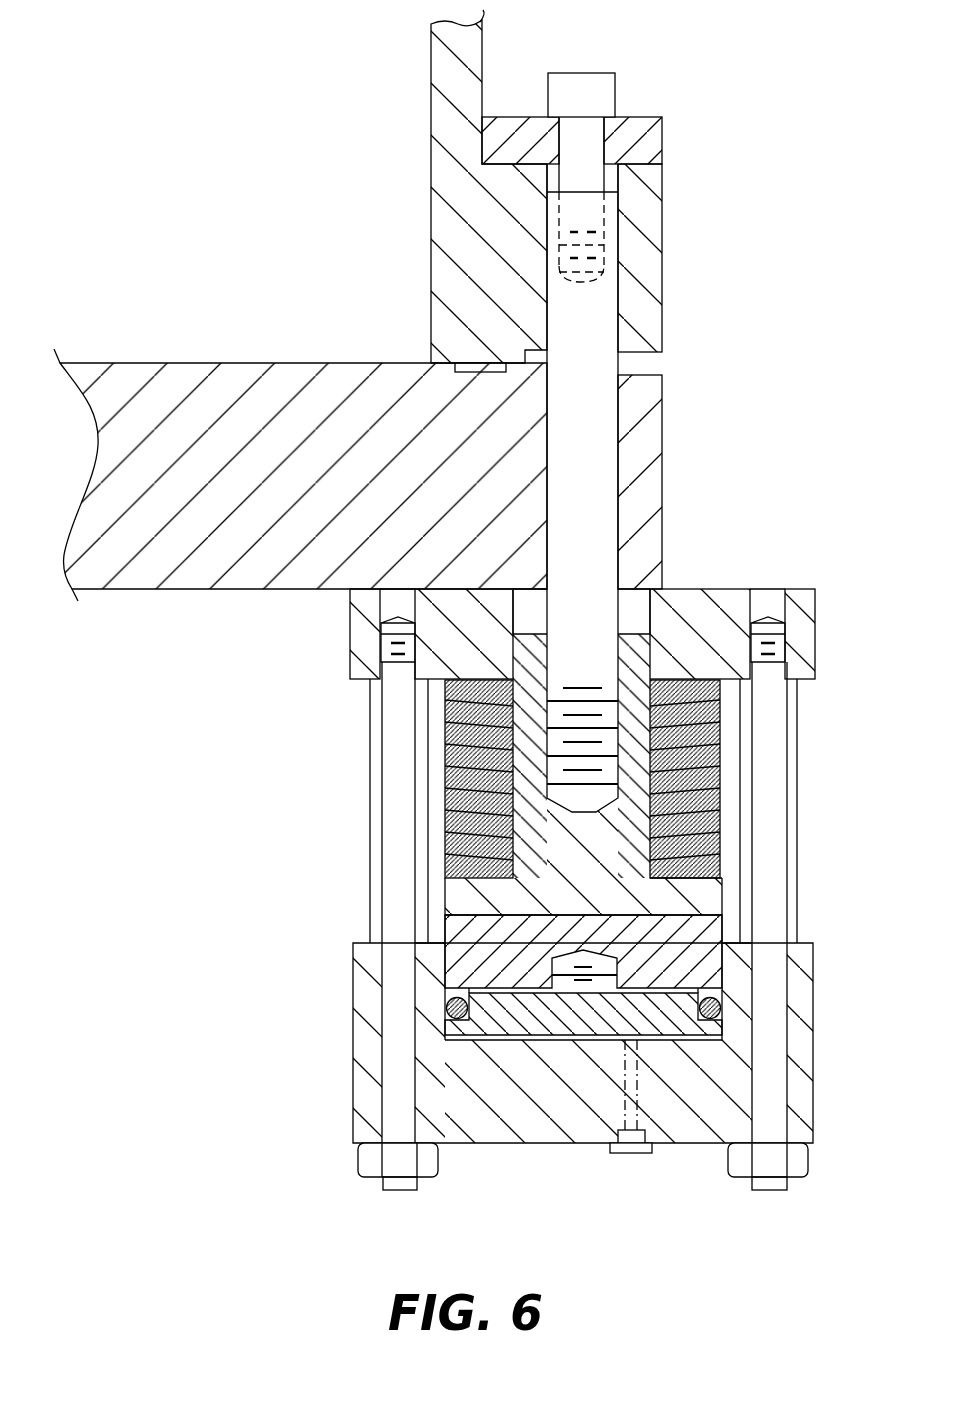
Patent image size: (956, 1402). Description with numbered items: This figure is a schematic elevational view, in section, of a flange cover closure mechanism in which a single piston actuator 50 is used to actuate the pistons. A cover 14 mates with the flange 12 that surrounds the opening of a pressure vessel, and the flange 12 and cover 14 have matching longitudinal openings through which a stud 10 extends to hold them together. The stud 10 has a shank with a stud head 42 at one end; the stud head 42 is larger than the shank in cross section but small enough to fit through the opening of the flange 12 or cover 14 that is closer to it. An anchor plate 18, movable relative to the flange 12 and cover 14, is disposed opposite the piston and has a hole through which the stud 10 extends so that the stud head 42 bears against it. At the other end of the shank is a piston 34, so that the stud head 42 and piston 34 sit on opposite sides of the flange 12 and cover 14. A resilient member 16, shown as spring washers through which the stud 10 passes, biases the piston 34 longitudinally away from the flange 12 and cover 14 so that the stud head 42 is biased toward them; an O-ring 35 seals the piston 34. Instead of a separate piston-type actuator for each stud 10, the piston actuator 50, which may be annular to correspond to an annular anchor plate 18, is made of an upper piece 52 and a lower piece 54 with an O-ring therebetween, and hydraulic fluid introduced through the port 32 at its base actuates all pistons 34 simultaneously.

The stud 10 is at (620, 373).
The flange 12 is at (648, 273).
The cover 14 is at (253, 375).
The resilient member 16 is at (445, 752).
The anchor plate 18 is at (662, 133).
The port 32 is at (627, 1153).
The piston 34 is at (710, 905).
The O-ring 35 is at (447, 1008).
The stud head 42 is at (610, 87).
The piston actuator 50 is at (443, 974).
The upper piece 52 is at (722, 972).
The lower piece 54 is at (710, 1030).